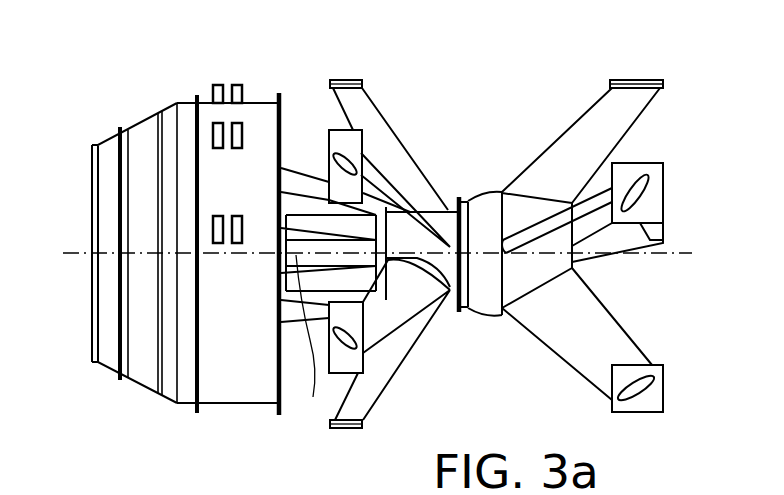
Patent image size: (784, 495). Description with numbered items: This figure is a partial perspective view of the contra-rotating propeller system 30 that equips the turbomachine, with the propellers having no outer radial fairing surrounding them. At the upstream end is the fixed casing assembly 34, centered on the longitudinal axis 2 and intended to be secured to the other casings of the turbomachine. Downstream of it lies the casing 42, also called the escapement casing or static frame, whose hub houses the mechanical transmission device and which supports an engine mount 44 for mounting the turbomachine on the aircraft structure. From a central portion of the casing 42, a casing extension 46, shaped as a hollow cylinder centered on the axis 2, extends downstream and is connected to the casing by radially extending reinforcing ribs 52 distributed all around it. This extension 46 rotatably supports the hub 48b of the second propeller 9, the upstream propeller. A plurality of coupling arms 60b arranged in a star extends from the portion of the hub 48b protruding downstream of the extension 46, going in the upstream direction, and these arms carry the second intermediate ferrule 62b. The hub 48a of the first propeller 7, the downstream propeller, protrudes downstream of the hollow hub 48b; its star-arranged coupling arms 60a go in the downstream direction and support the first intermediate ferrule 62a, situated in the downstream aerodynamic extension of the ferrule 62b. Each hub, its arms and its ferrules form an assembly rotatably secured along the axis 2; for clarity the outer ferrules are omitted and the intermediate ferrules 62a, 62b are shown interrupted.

The longitudinal axis 2 is at (693, 255).
The first propeller 7 is at (645, 71).
The second propeller 9 is at (385, 85).
The contra-rotating propeller system 30 is at (113, 67).
The fixed casing assembly 34 is at (148, 128).
The casing 42 is at (257, 103).
The engine mount 44 is at (220, 85).
The casing extension 46 is at (309, 335).
The hub of the first propeller 48a is at (563, 268).
The hub of the second propeller 48b is at (437, 267).
The reinforcing ribs 52 is at (302, 207).
The coupling arms of the first propeller 60a is at (565, 140).
The coupling arms of the second propeller 60b is at (380, 128).
The first intermediate ferrule 62a is at (662, 170).
The second intermediate ferrule 62b is at (358, 142).